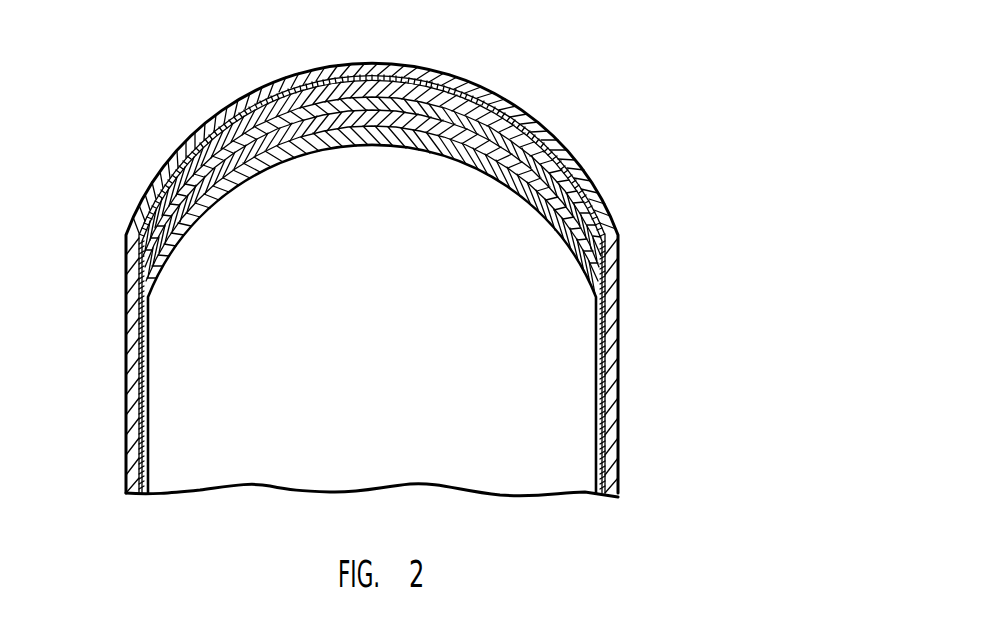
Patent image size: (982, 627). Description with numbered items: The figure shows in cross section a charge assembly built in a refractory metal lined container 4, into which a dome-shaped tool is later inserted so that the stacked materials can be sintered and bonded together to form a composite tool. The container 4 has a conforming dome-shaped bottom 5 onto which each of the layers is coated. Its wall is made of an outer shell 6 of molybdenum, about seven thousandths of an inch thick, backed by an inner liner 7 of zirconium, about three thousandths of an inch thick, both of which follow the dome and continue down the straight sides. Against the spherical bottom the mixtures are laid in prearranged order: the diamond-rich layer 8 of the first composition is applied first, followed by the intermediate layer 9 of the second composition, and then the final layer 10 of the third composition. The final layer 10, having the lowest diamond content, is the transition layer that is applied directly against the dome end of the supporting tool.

The container 4 is at (372, 321).
The dome-shaped bottom 5 is at (372, 261).
The outer shell 6 is at (333, 260).
The inner liner 7 is at (390, 284).
The diamond-rich layer 8 is at (348, 168).
The intermediate layer 9 is at (372, 139).
The final layer 10 is at (372, 202).